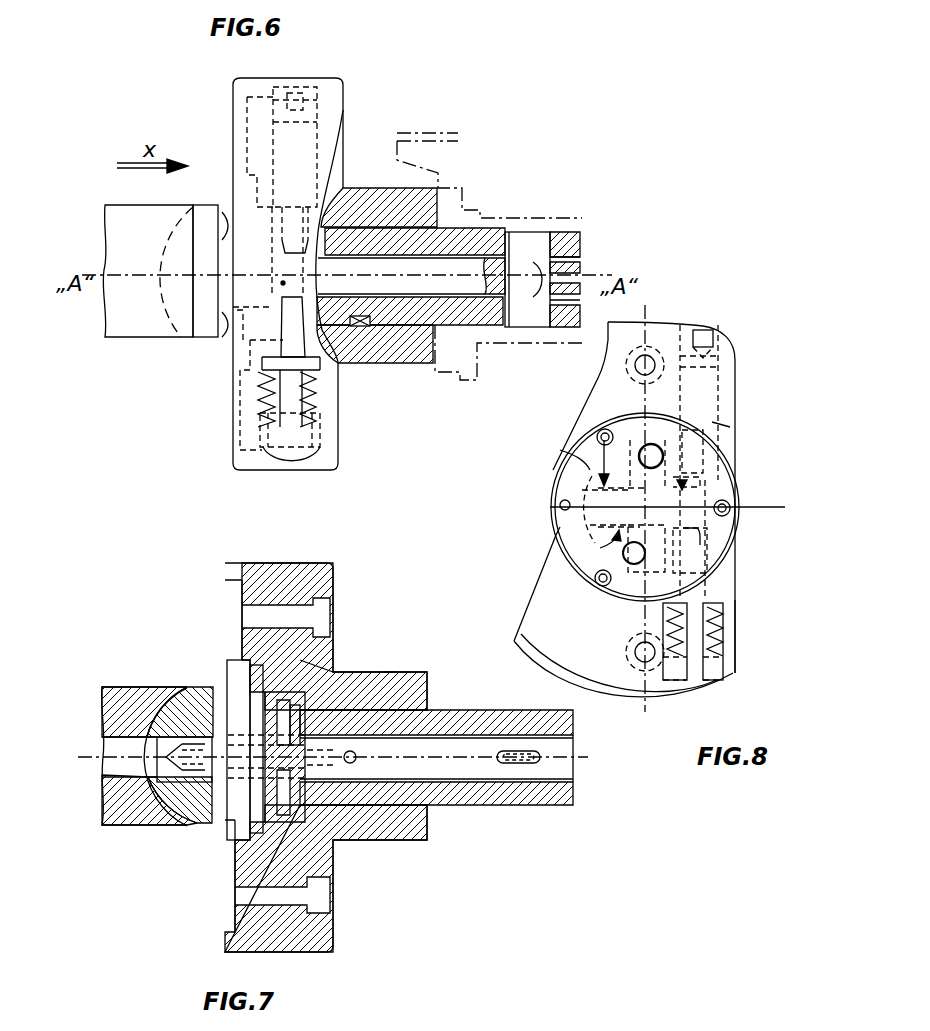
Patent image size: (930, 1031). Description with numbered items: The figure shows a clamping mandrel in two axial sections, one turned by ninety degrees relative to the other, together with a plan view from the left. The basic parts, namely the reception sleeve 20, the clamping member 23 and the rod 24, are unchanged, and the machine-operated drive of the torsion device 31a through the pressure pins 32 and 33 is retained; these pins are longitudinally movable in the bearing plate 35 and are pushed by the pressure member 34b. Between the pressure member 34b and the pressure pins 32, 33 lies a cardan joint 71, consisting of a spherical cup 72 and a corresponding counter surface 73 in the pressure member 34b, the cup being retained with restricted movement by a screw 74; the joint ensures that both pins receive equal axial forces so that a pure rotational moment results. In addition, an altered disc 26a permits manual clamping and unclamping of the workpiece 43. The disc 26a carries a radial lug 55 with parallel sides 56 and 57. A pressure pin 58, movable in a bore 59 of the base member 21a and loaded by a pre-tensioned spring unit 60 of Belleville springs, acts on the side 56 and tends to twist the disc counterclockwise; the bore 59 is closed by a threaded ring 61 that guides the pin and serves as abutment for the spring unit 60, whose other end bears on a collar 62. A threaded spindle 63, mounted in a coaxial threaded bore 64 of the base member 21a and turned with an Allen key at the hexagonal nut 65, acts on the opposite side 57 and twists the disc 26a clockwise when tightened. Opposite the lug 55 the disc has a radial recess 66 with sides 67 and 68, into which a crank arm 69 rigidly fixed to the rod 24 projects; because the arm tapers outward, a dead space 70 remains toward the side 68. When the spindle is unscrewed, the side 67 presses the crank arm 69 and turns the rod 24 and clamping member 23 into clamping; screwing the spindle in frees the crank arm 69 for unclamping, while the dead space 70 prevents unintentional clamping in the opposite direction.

In FIG. 6, the reception sleeve 20 is at (473, 247).
In FIG. 7, the reception sleeve 20 is at (477, 790).
In FIG. 6, the base member 21a is at (323, 190).
In FIG. 6, the clamping member 23 is at (530, 250).
In FIG. 7, the clamping member 23 is at (540, 764).
In FIG. 6, the rod 24 is at (458, 285).
In FIG. 7, the rod 24 is at (463, 757).
In FIG. 8, the disc 26a is at (600, 548).
In FIG. 7, the disc 26a is at (335, 670).
In FIG. 8, the torsion device 31a is at (575, 474).
In FIG. 7, the torsion device 31a is at (316, 836).
In FIG. 6, the pressure pin 32 is at (250, 223).
In FIG. 8, the pressure pin 32 is at (604, 440).
In FIG. 7, the pressure pin 32 is at (237, 693).
In FIG. 6, the pressure pin 33 is at (245, 323).
In FIG. 8, the pressure pin 33 is at (590, 545).
In FIG. 7, the pressure pin 33 is at (258, 778).
In FIG. 6, the pressure member 34b is at (124, 338).
In FIG. 7, the pressure member 34b is at (118, 814).
In FIG. 8, the bearing plate 35 is at (578, 457).
In FIG. 7, the bearing plate 35 is at (257, 740).
In FIG. 6, the workpiece 43 is at (440, 160).
In FIG. 6, the radial lug 55 is at (283, 283).
In FIG. 8, the radial lug 55 is at (693, 522).
In FIG. 6, the side 56 is at (320, 300).
In FIG. 8, the side 56 is at (687, 553).
In FIG. 6, the side 57 is at (313, 222).
In FIG. 8, the side 57 is at (685, 482).
In FIG. 6, the pressure pin 58 is at (293, 402).
In FIG. 8, the pressure pin 58 is at (713, 585).
In FIG. 8, the bore 59 is at (695, 598).
In FIG. 8, the spring unit 60 is at (717, 633).
In FIG. 8, the threaded ring 61 is at (712, 664).
In FIG. 8, the collar 62 is at (692, 600).
In FIG. 6, the threaded spindle 63 is at (297, 160).
In FIG. 8, the threaded spindle 63 is at (700, 400).
In FIG. 6, the threaded bore 64 is at (320, 146).
In FIG. 8, the threaded bore 64 is at (730, 427).
In FIG. 8, the hexagonal nut 65 is at (697, 328).
In FIG. 8, the radial recess 66 is at (598, 527).
In FIG. 7, the radial recess 66 is at (325, 708).
In FIG. 8, the side 67 is at (636, 447).
In FIG. 8, the side 68 is at (622, 562).
In FIG. 8, the crank arm 69 is at (560, 505).
In FIG. 7, the crank arm 69 is at (383, 672).
In FIG. 8, the dead space 70 is at (602, 542).
In FIG. 6, the cardan joint 71 is at (188, 205).
In FIG. 7, the cardan joint 71 is at (173, 843).
In FIG. 7, the spherical cup 72 is at (165, 715).
In FIG. 7, the counter surface 73 is at (160, 698).
In FIG. 7, the screw 74 is at (114, 764).